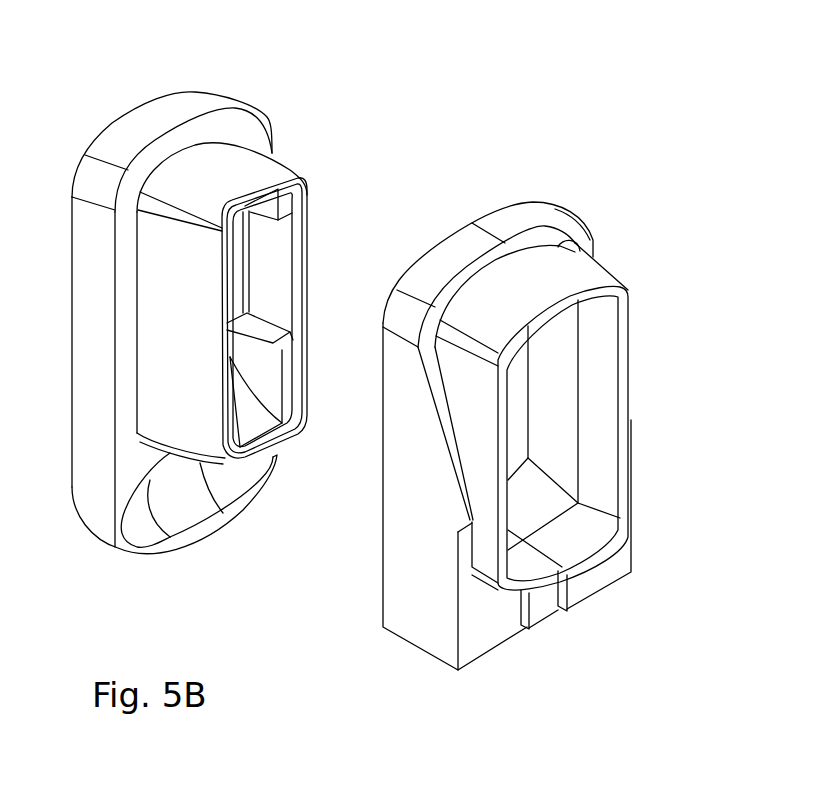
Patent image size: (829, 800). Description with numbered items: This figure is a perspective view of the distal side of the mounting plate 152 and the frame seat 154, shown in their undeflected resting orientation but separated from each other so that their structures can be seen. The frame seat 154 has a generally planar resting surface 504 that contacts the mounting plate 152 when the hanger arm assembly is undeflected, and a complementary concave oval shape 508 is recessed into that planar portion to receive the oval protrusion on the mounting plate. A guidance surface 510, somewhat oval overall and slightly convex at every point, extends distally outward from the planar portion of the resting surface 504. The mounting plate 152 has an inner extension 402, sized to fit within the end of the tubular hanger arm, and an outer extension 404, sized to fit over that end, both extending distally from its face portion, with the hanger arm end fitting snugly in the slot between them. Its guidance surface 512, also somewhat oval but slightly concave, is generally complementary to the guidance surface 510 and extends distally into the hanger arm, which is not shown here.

The frame seat 154 is at (116, 94).
The resting surface 504 is at (260, 132).
The guidance surface 510 is at (283, 163).
The concave oval shape 508 is at (188, 518).
The mounting plate 152 is at (469, 181).
The outer extension 404 is at (577, 226).
The inner extension 402 is at (615, 278).
The guidance surface 512 is at (567, 378).